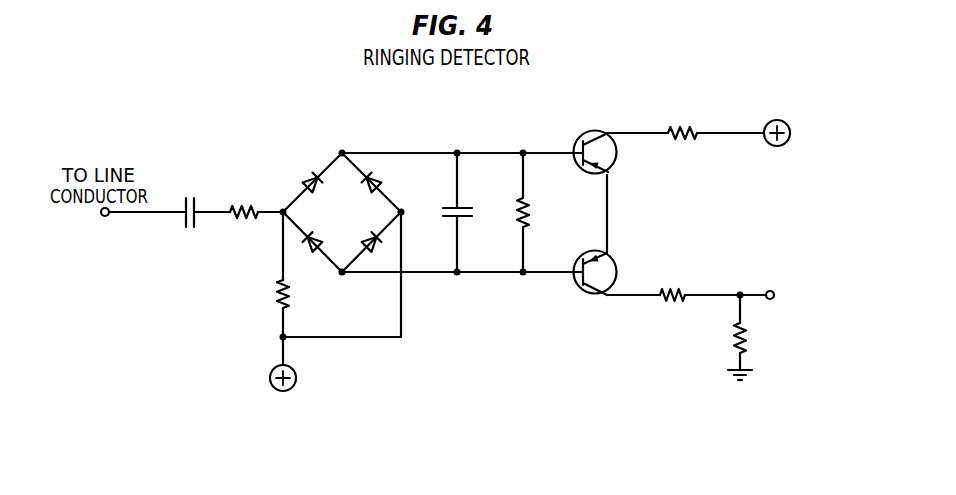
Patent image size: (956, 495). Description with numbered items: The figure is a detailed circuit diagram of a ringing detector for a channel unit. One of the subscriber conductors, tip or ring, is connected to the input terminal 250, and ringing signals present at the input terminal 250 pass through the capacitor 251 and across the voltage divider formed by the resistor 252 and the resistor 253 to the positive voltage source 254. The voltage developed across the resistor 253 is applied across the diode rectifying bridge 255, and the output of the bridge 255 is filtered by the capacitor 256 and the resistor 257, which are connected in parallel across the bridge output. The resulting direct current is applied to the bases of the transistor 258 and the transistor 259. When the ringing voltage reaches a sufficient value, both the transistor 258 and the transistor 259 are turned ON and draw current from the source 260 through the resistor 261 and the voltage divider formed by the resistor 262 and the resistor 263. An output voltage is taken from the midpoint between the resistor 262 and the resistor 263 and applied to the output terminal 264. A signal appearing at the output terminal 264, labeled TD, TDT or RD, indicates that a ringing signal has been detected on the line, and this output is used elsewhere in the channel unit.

The input terminal 250 is at (106, 224).
The capacitor 251 is at (189, 225).
The resistor 252 is at (243, 196).
The resistor 253 is at (263, 294).
The positive voltage source 254 is at (300, 378).
The diode rectifying bridge 255 is at (356, 221).
The capacitor 256 is at (447, 199).
The resistor 257 is at (540, 213).
The transistor 258 is at (611, 159).
The transistor 259 is at (586, 283).
The source 260 is at (775, 120).
The resistor 261 is at (682, 118).
The resistor 262 is at (674, 280).
The resistor 263 is at (722, 338).
The output terminal 264 is at (767, 291).